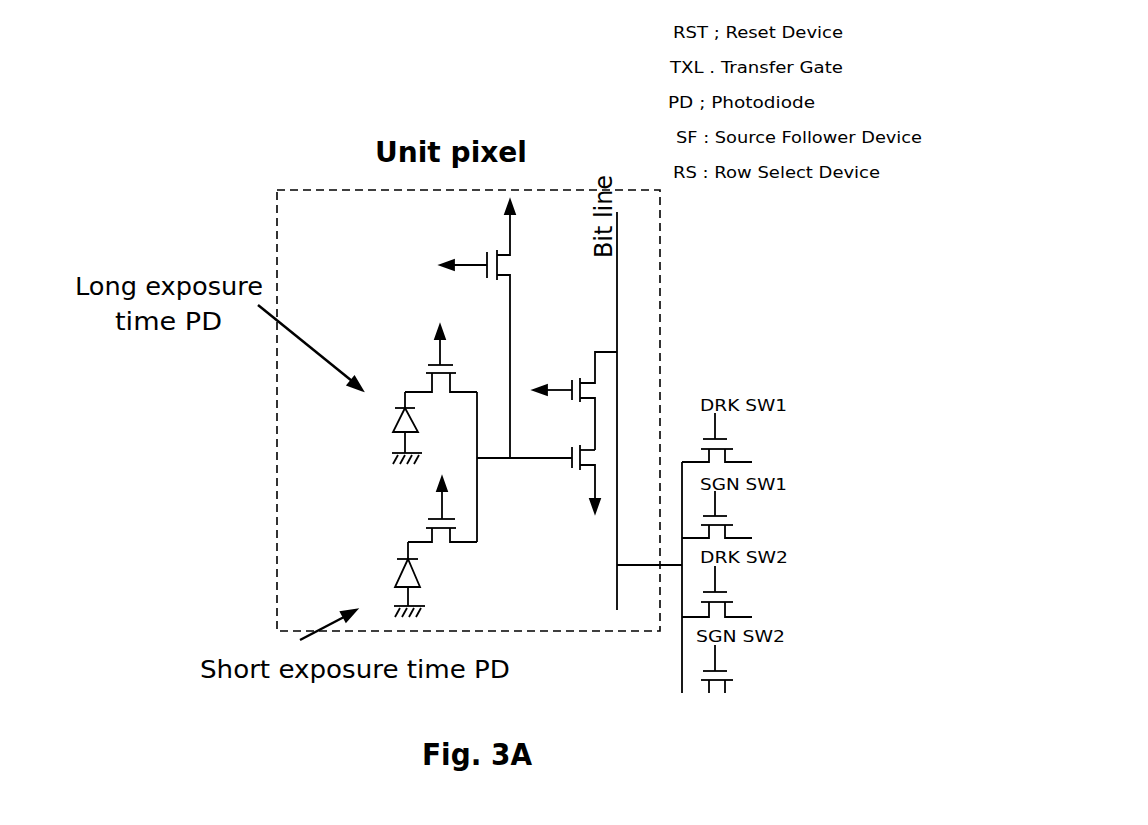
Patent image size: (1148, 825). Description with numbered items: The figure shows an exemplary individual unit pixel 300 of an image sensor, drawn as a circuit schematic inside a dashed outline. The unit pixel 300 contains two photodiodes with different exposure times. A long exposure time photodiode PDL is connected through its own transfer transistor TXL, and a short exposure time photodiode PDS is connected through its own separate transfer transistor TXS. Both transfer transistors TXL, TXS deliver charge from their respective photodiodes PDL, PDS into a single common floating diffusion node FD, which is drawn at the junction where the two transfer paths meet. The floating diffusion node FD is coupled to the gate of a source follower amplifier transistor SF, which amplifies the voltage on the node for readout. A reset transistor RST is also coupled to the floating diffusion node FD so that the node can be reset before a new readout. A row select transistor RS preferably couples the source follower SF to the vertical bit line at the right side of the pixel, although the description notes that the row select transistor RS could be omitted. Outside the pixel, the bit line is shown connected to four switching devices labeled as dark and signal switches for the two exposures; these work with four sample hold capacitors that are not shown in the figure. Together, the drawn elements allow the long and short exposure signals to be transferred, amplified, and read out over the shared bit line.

The unit pixel 300 is at (663, 278).
The reset transistor RST is at (486, 248).
The transfer transistor TXL is at (426, 370).
The transfer transistor TXS is at (423, 519).
The long exposure time photodiode PDL is at (396, 421).
The short exposure time photodiode PDS is at (400, 575).
The row select transistor RS is at (588, 372).
The source follower amplifier transistor SF is at (581, 478).
The floating diffusion node FD is at (518, 462).